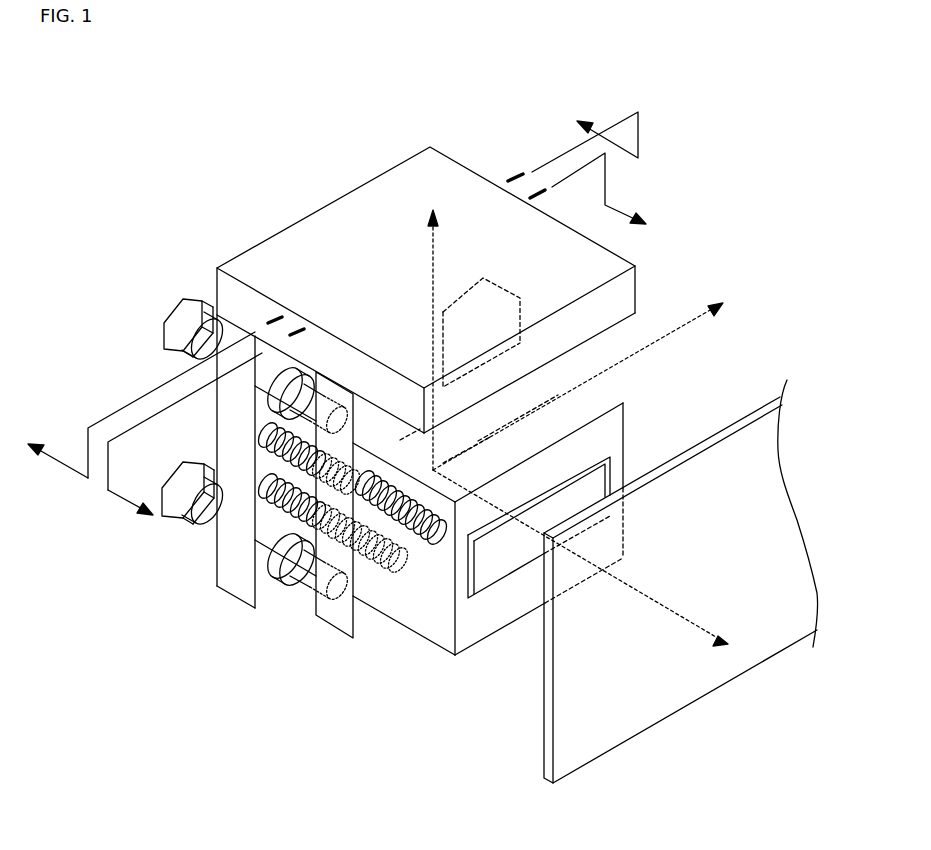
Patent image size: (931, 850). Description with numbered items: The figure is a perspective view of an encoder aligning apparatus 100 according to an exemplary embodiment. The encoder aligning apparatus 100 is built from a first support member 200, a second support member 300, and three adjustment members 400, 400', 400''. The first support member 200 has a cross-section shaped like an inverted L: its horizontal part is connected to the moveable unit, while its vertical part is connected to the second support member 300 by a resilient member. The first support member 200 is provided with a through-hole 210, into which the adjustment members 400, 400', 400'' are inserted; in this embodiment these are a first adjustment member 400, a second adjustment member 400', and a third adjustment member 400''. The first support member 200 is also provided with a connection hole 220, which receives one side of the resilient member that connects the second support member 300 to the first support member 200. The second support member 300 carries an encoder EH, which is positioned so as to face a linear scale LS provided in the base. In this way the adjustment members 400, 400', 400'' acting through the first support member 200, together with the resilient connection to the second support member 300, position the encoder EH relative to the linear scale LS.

The encoder aligning apparatus 100 is at (258, 80).
The first support member 200 is at (302, 237).
The through-hole 210 is at (300, 421).
The connection hole 220 is at (266, 447).
The second support member 300 is at (335, 620).
The first adjustment member 400 is at (148, 515).
The second adjustment member 400' is at (164, 310).
The third adjustment member 400'' is at (343, 245).
The encoder EH is at (430, 620).
The linear scale LS is at (660, 692).